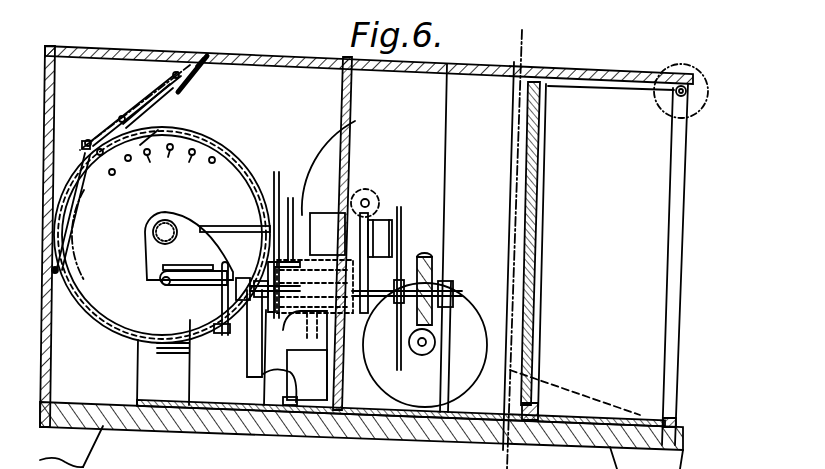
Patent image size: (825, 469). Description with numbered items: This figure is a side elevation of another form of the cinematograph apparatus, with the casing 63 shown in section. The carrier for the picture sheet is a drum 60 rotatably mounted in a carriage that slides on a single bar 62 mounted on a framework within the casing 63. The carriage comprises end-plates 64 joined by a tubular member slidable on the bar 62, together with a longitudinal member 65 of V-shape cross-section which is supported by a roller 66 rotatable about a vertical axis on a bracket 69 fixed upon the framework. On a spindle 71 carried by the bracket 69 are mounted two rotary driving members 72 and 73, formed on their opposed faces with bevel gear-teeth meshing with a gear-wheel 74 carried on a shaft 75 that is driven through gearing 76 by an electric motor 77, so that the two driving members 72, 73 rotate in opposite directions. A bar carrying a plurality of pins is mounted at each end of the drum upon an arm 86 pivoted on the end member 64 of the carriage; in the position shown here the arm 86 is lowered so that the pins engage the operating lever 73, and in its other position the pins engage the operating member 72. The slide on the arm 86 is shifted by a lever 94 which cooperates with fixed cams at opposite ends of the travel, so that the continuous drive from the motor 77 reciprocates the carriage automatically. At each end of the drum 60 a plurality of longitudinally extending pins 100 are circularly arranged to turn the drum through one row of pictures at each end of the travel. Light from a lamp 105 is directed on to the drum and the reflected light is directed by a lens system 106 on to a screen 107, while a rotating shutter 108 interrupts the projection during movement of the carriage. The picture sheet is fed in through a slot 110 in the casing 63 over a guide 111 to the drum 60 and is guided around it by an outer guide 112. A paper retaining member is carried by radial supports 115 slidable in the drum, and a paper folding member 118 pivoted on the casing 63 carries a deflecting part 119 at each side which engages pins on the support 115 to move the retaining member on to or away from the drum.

The drum 60 is at (213, 167).
The bar 62 is at (152, 224).
The casing 63 is at (280, 433).
The end-plate 64 is at (190, 223).
The longitudinal member 65 is at (247, 263).
The roller 66 is at (227, 333).
The bracket 69 is at (270, 372).
The spindle 71 is at (322, 263).
The rotary driving member 72 is at (290, 250).
The rotary driving member 73 is at (268, 362).
The gear-wheel 74 is at (343, 300).
The shaft 75 is at (377, 284).
The gearing 76 is at (435, 341).
The electric motor 77 is at (465, 287).
The arm 86 is at (150, 327).
The lever 94 is at (225, 334).
The pins 100 is at (156, 167).
The lamp 105 is at (327, 147).
The lens system 106 is at (372, 196).
The screen 107 is at (530, 195).
The rotating shutter 108 is at (380, 284).
The slot 110 is at (203, 58).
The guide 111 is at (205, 76).
The outer guide 112 is at (113, 330).
The radial support 115 is at (276, 212).
The paper folding member 118 is at (150, 105).
The deflecting part 119 is at (158, 130).